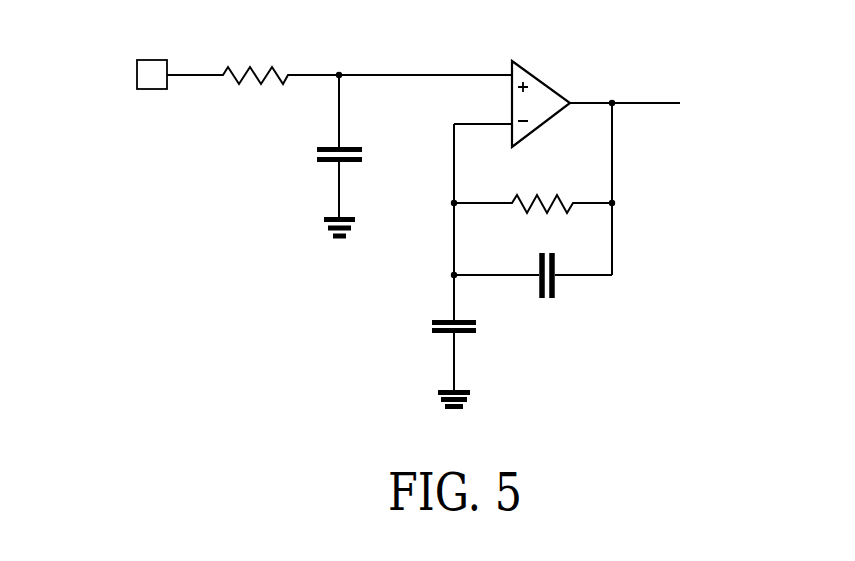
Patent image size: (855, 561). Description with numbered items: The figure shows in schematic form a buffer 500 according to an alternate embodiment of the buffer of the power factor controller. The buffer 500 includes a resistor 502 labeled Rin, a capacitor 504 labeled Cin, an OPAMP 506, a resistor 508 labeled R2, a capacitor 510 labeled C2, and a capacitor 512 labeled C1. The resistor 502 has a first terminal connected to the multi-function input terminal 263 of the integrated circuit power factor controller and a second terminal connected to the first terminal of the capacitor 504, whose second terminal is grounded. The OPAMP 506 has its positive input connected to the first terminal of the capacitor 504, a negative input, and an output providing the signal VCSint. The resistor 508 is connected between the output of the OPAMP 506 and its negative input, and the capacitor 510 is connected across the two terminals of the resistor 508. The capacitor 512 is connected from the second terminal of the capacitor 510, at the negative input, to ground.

The multi-function input terminal 263 is at (158, 59).
The buffer 500 is at (614, 460).
The resistor 502 is at (260, 84).
The capacitor 504 is at (355, 146).
The OPAMP 506 is at (553, 120).
The resistor 508 is at (511, 200).
The capacitor 510 is at (537, 258).
The capacitor 512 is at (441, 318).